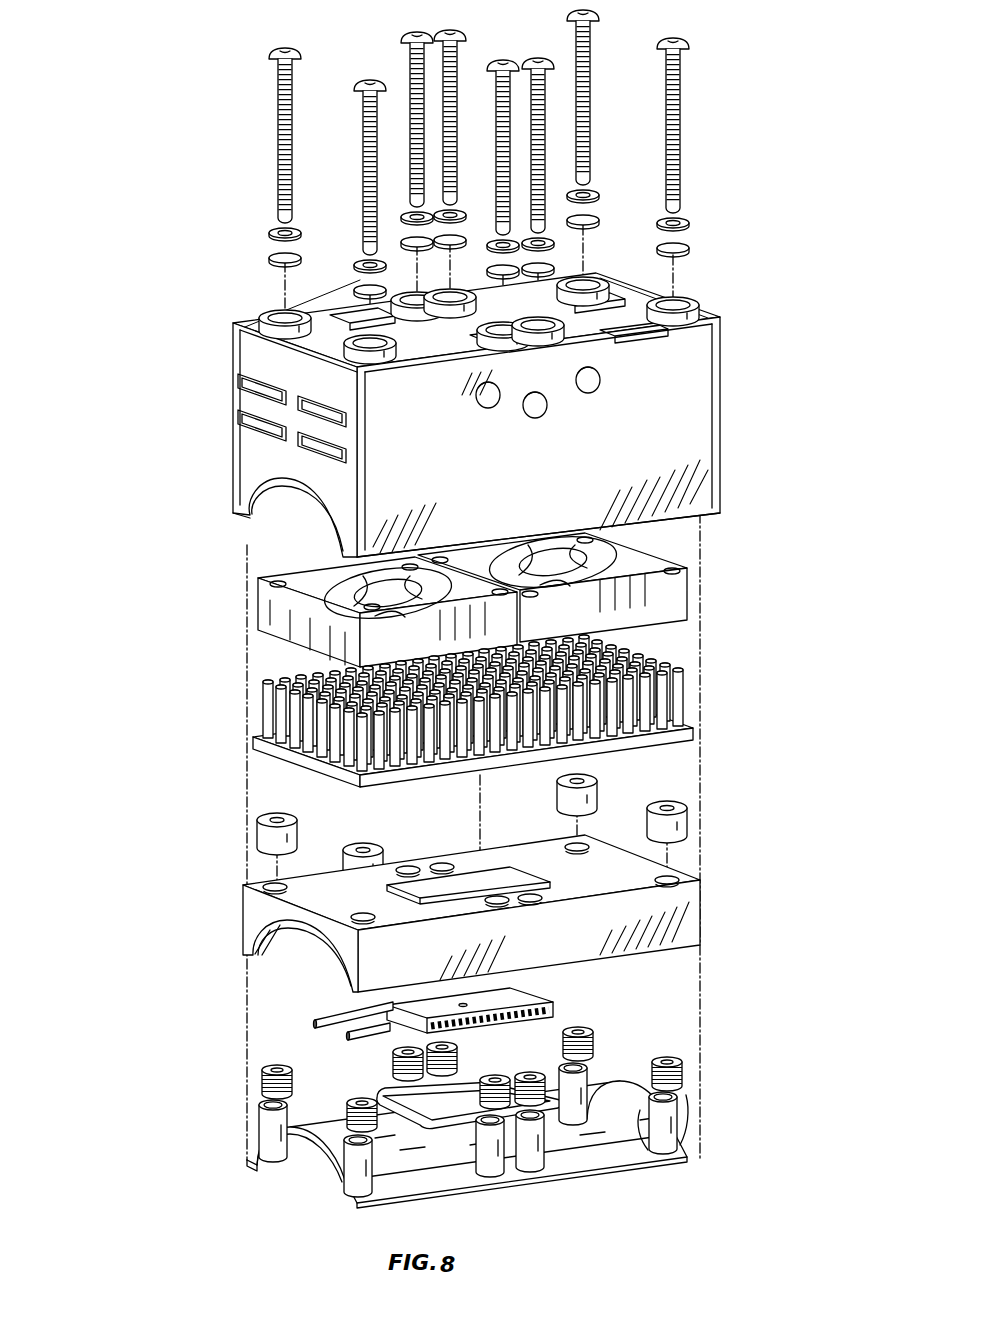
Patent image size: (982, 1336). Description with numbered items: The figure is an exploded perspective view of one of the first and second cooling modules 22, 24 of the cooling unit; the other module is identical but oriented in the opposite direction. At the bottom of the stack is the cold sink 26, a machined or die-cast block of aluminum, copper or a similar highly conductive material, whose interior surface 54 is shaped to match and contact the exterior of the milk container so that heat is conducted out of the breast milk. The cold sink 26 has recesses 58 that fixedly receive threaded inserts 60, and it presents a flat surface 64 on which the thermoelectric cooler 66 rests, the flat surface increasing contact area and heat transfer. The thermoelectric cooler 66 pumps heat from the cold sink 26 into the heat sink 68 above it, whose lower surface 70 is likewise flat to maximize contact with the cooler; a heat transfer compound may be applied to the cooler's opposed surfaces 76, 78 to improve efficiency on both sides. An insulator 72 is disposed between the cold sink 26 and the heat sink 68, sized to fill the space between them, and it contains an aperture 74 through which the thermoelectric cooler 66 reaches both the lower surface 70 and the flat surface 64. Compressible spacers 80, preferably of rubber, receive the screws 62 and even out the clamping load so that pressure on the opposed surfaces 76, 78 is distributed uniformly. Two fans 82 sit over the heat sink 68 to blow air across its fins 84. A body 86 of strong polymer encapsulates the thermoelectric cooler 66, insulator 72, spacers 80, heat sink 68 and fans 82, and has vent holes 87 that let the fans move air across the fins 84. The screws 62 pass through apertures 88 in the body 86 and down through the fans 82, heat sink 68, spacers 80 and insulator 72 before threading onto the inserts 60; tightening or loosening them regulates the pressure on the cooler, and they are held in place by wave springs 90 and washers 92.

The first cooling module 22 is at (755, 12).
The second cooling module 24 is at (756, 1196).
The cold sink 26 is at (396, 1124).
The interior surface 54 is at (285, 1148).
The recesses 58 is at (653, 1143).
The threaded inserts 60 is at (117, 1057).
The screws 62 is at (683, 122).
The flat surface 64 is at (470, 1092).
The thermoelectric cooler 66 is at (359, 1001).
The heat sink 68 is at (406, 737).
The lower surface 70 is at (430, 777).
The insulator 72 is at (381, 885).
The aperture 74 is at (473, 887).
The first opposed surface 76 is at (508, 1000).
The second opposed surface 78 is at (497, 1037).
The compressible spacers 80 is at (117, 810).
The fans 82 is at (117, 569).
The fins 84 is at (690, 700).
The body 86 is at (117, 322).
The vent holes 87 is at (250, 425).
The apertures 88 is at (262, 303).
The wave springs 90 is at (212, 283).
The washers 92 is at (249, 247).